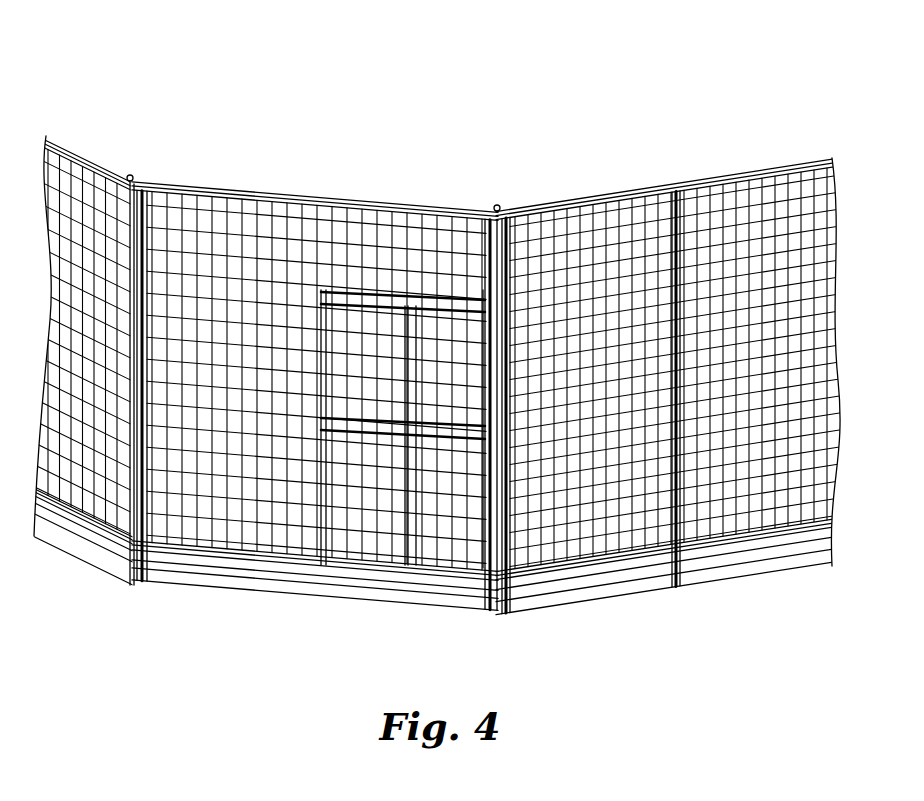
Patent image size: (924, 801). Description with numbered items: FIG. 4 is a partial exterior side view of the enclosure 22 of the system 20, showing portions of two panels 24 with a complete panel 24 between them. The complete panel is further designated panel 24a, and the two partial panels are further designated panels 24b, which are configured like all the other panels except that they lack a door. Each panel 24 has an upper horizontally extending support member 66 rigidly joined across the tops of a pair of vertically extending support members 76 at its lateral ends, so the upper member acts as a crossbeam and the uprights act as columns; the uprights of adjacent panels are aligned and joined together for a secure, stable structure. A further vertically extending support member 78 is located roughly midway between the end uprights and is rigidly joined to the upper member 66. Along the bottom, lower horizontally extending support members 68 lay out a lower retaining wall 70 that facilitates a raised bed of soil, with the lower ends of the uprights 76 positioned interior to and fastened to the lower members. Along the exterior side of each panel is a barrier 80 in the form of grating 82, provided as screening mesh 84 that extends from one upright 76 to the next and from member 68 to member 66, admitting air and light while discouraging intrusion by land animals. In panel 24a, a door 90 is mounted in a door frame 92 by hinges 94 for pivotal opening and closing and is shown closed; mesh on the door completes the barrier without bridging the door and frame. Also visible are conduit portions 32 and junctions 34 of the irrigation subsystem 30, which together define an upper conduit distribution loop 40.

The system 20 is at (196, 68).
The enclosure 22 is at (628, 602).
The panel 24 is at (286, 184).
The complete panel 24a is at (382, 205).
The partial panel 24b is at (52, 136).
The subsystem 30 is at (838, 148).
The conduit portion 32 is at (68, 154).
The junction 34 is at (132, 176).
The upper conduit distribution loop 40 is at (442, 280).
The upper horizontally extending support member 66 is at (232, 262).
The lower horizontally extending support member 68 is at (827, 530).
The lower retaining wall 70 is at (773, 582).
The vertically extending support member 76 is at (125, 178).
The vertically extending support member 78 is at (320, 212).
The barrier 80 is at (842, 388).
The grating 82 is at (203, 200).
The screening mesh 84 is at (772, 330).
The door 90 is at (355, 290).
The door frame 92 is at (412, 285).
The hinge 94 is at (522, 295).